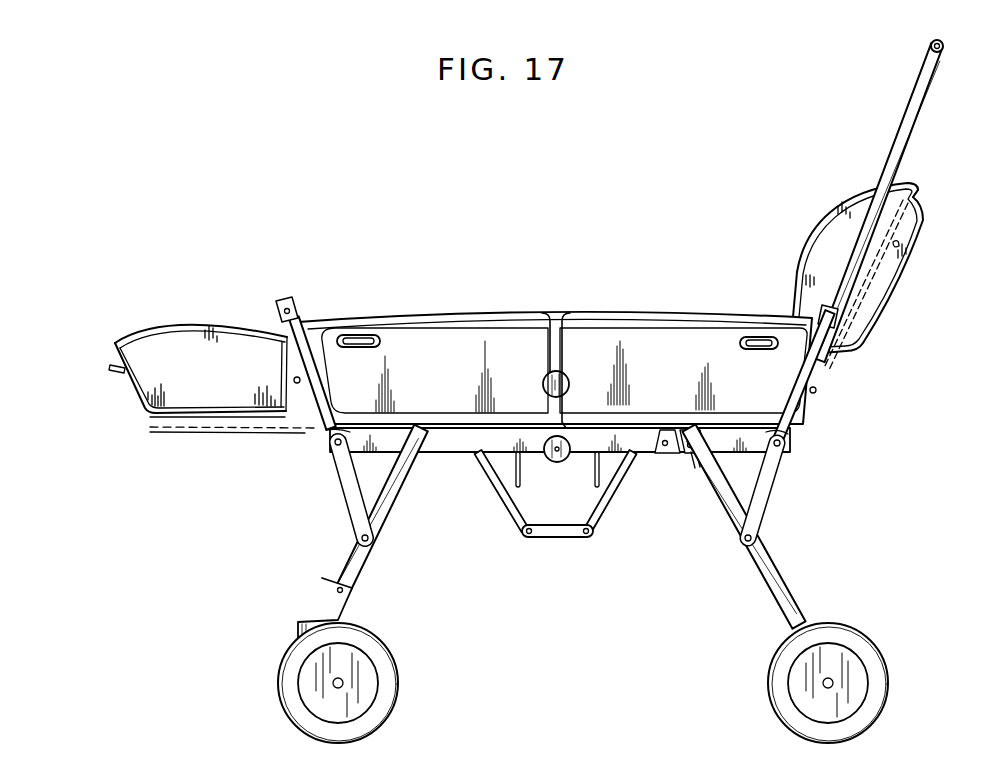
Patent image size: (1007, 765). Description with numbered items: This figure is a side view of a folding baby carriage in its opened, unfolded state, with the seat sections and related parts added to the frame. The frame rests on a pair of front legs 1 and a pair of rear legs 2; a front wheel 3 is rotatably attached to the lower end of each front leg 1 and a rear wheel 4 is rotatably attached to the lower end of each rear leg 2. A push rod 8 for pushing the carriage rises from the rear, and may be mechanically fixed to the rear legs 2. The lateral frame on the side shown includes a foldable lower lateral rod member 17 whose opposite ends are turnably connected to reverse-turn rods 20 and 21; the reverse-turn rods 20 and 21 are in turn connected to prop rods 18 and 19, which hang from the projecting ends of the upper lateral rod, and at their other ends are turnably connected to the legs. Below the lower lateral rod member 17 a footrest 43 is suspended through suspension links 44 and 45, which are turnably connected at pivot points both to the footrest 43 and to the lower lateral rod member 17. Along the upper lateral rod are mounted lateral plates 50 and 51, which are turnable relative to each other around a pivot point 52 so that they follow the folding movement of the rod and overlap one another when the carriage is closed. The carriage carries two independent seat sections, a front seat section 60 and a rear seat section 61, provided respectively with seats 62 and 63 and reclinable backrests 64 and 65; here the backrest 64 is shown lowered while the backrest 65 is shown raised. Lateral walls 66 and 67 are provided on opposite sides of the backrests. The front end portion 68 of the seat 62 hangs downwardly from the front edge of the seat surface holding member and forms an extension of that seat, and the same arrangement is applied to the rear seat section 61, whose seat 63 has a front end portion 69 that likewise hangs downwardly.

The front leg 1 is at (364, 557).
The rear leg 2 is at (772, 574).
The front wheel 3 is at (398, 686).
The rear wheel 4 is at (887, 685).
The push rod 8 is at (908, 112).
The lower lateral rod member 17 is at (430, 447).
The prop rod 18 is at (322, 436).
The prop rod 19 is at (790, 440).
The reverse-turn rod 20 is at (352, 477).
The reverse-turn rod 21 is at (760, 483).
The footrest 43 is at (560, 538).
The suspension link 44 is at (505, 495).
The suspension link 45 is at (605, 510).
The lateral plate 50 is at (472, 330).
The lateral plate 51 is at (650, 335).
The pivot point 52 is at (545, 373).
The front seat section 60 is at (198, 340).
The rear seat section 61 is at (880, 334).
The seat 62 is at (404, 425).
The seat 63 is at (722, 425).
The backrest 64 is at (210, 432).
The backrest 65 is at (880, 277).
The lateral wall 66 is at (168, 335).
The lateral wall 67 is at (905, 232).
The front end portion 68 is at (515, 472).
The front end portion 69 is at (600, 473).